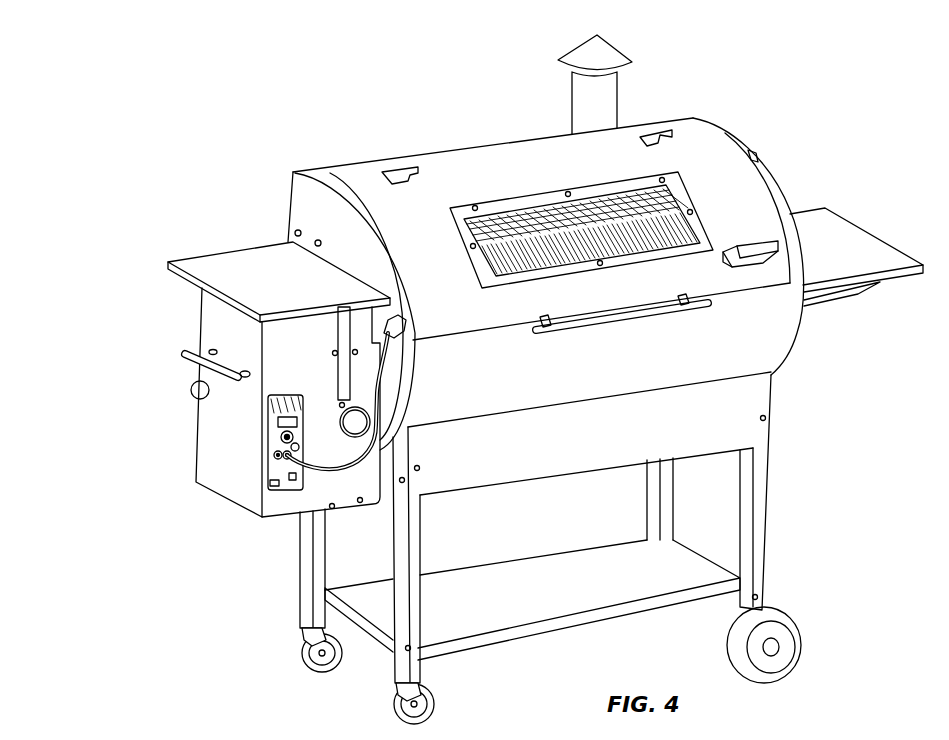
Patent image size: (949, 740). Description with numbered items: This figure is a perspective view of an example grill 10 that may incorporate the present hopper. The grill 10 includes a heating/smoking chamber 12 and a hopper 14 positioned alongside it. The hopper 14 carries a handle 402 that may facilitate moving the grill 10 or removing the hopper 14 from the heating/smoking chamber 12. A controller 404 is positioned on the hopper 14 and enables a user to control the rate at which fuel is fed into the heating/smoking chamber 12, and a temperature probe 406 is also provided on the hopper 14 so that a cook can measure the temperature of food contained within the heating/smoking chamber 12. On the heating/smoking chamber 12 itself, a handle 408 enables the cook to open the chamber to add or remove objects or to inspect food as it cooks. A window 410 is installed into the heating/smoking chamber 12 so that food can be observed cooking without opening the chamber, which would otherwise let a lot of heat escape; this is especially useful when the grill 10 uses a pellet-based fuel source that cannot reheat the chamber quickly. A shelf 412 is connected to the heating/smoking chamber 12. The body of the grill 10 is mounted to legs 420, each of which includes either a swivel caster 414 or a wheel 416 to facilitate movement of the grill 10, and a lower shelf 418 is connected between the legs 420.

The grill 10 is at (740, 61).
The heating/smoking chamber 12 is at (543, 128).
The hopper 14 is at (271, 251).
The handle 402 is at (185, 352).
The controller 404 is at (265, 461).
The temperature probe 406 is at (346, 476).
The handle 408 is at (598, 311).
The window 410 is at (592, 183).
The shelf 412 is at (840, 259).
The swivel caster 414 is at (398, 688).
The wheel 416 is at (779, 682).
The shelf 418 is at (547, 630).
The legs 420 is at (420, 523).